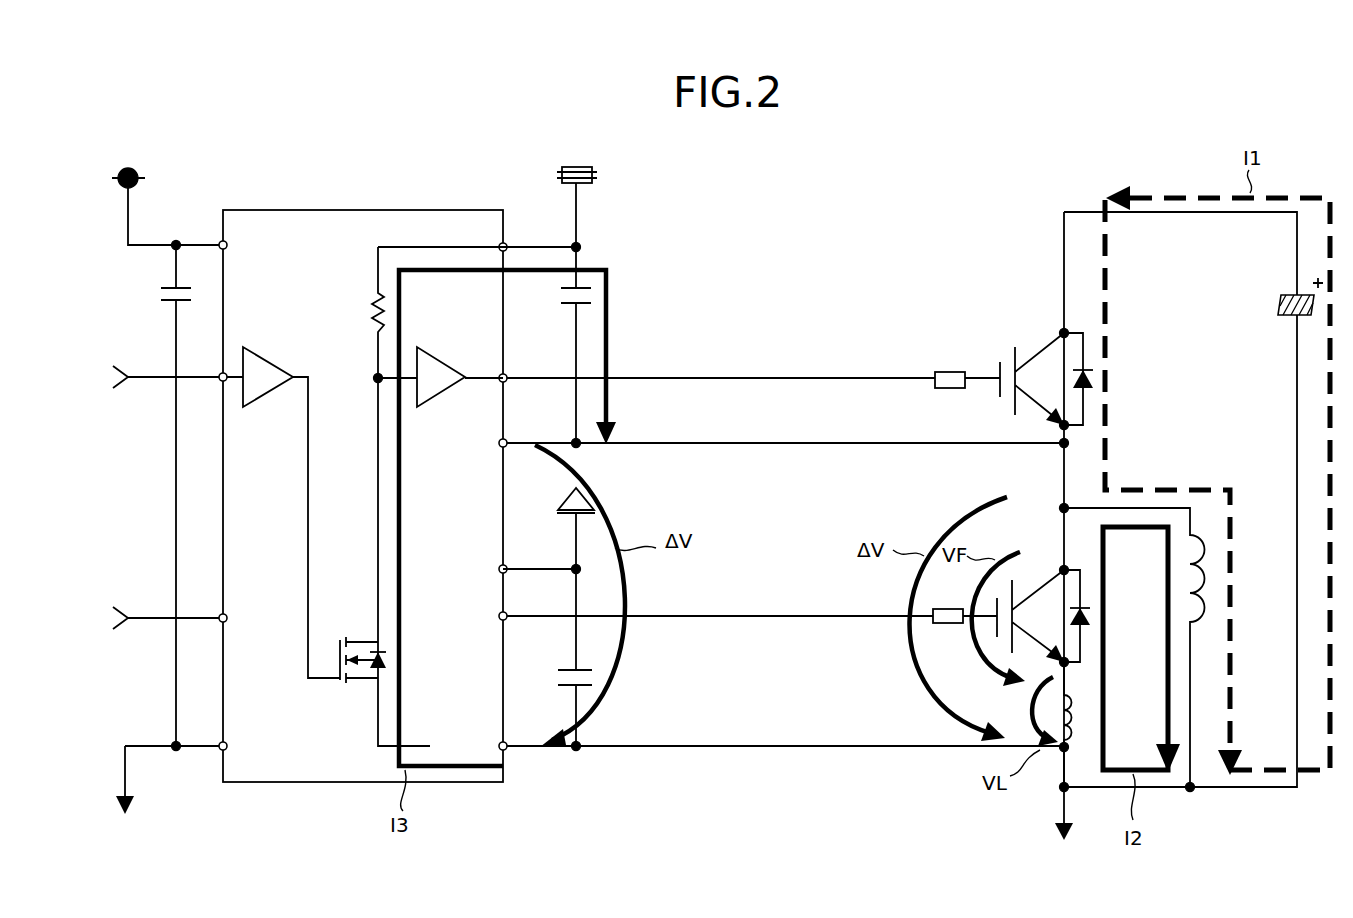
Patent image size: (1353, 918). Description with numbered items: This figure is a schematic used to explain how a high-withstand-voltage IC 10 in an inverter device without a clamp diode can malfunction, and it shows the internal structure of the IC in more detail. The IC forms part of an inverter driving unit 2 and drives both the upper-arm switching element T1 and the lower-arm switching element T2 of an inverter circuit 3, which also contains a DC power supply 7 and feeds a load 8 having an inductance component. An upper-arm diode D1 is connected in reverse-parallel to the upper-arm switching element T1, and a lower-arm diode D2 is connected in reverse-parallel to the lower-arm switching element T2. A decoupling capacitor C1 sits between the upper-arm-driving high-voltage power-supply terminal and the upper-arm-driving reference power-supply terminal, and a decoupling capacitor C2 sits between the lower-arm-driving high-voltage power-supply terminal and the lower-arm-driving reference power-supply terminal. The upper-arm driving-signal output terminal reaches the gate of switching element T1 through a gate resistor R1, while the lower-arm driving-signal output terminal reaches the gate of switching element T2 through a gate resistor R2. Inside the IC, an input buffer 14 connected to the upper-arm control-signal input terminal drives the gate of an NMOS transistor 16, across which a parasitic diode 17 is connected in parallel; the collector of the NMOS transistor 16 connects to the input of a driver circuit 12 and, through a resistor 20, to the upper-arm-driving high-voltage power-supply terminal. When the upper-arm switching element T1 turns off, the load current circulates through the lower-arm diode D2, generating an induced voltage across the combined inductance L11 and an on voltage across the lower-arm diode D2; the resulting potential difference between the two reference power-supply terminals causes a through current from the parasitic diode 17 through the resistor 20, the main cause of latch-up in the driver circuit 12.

The inverter driving unit 2 is at (358, 160).
The inverter circuit 3 is at (1186, 158).
The DC power supply 7 is at (1278, 305).
The load 8 is at (1208, 568).
The high-withstand-voltage IC 10 is at (270, 783).
The driver circuit 12 is at (432, 349).
The input buffer 14 is at (268, 398).
The NMOS transistor 16 is at (350, 636).
The parasitic diode 17 is at (370, 672).
The resistor 20 is at (377, 291).
The decoupling capacitor C1 is at (600, 293).
The decoupling capacitor C2 is at (600, 674).
The gate resistor R1 is at (950, 372).
The gate resistor R2 is at (950, 625).
The upper-arm switching element T1 is at (1007, 356).
The lower-arm switching element T2 is at (1020, 592).
The upper-arm diode D1 is at (1092, 377).
The lower-arm diode D2 is at (1092, 620).
The combined inductance L11 is at (1084, 718).